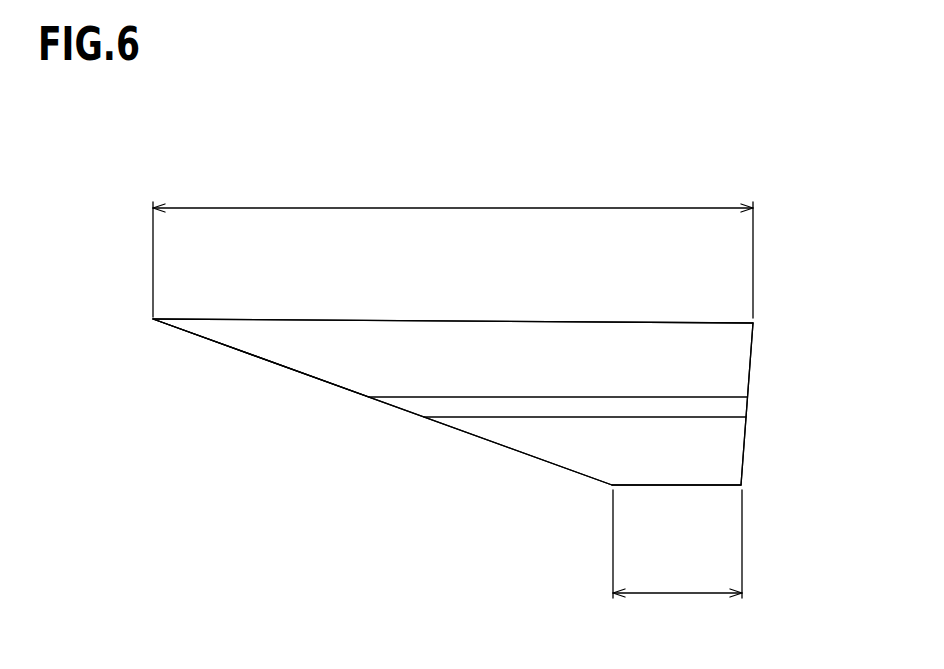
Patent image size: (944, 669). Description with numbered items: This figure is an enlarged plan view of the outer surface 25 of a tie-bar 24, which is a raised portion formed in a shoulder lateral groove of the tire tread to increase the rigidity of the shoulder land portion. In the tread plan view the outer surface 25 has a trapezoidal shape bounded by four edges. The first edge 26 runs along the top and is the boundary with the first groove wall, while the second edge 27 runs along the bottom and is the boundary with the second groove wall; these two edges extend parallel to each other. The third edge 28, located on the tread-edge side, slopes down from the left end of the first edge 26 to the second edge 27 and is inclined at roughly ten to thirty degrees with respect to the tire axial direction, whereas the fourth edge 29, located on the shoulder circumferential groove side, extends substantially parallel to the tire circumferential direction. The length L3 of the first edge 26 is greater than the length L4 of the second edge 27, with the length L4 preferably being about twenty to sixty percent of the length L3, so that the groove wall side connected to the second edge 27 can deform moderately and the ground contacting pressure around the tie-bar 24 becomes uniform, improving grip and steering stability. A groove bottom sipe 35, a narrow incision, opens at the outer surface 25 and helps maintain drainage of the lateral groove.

The tie-bar 24 is at (395, 423).
The outer surface 25 is at (683, 367).
The first edge 26 is at (450, 322).
The second edge 27 is at (678, 490).
The third edge 28 is at (267, 360).
The fourth edge 29 is at (747, 453).
The groove bottom sipe 35 is at (715, 408).
The length of the first edge L3 is at (453, 246).
The length of the second edge L4 is at (677, 560).